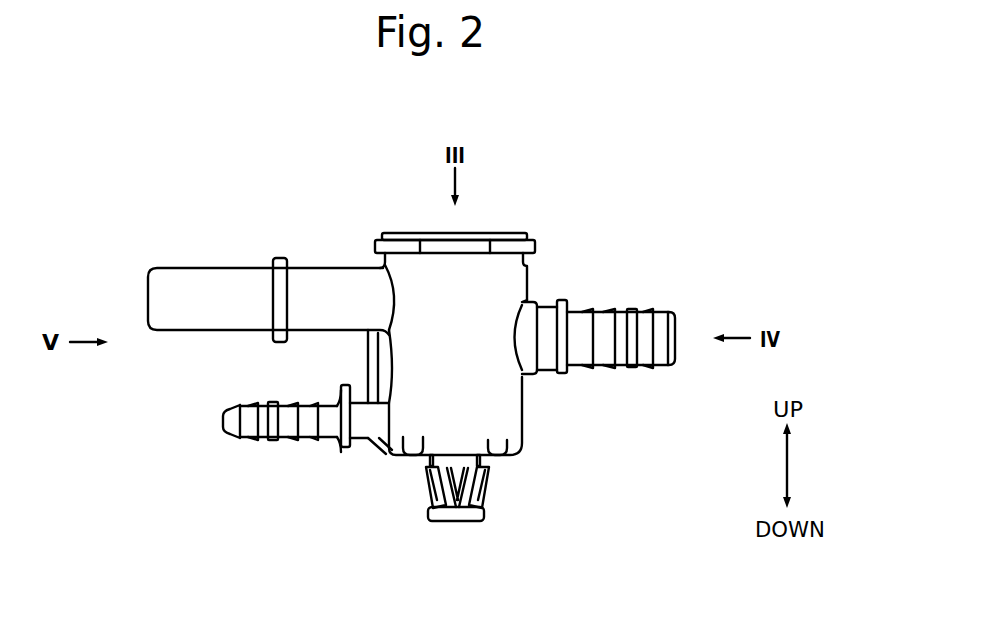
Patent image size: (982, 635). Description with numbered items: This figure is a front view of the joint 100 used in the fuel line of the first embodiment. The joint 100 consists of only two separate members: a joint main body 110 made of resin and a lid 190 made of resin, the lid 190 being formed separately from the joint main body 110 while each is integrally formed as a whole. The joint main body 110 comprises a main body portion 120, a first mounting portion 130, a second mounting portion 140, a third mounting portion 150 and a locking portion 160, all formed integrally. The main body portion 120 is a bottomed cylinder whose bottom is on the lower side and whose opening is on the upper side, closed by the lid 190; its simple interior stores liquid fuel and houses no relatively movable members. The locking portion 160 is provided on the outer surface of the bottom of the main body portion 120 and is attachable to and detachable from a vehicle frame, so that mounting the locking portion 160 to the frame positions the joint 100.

The joint 100 is at (577, 160).
The joint main body 110 is at (523, 283).
The main body portion 120 is at (413, 287).
The first mounting portion 130 is at (205, 267).
The second mounting portion 140 is at (650, 310).
The third mounting portion 150 is at (283, 441).
The locking portion 160 is at (450, 522).
The lid 190 is at (511, 232).